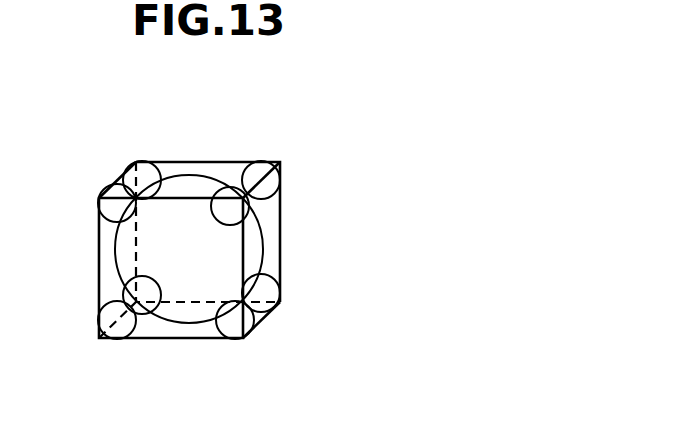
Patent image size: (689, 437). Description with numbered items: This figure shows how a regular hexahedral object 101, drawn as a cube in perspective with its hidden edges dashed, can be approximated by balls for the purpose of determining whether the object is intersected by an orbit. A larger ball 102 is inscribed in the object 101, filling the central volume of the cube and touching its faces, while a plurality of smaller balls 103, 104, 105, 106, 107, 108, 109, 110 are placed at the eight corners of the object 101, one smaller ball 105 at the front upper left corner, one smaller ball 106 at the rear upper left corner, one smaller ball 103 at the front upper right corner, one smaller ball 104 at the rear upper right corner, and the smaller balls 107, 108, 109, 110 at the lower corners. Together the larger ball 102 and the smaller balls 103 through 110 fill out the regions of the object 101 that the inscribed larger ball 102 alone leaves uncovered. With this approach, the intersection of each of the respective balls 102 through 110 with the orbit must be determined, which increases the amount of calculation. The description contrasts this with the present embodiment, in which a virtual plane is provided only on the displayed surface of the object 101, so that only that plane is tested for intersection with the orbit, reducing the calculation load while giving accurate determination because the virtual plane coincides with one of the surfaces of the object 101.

The regular hexahedral object 101 is at (220, 162).
The larger ball 102 is at (265, 245).
The smaller ball 103 is at (242, 205).
The smaller ball 104 is at (269, 180).
The smaller ball 105 is at (112, 207).
The smaller ball 106 is at (143, 172).
The smaller ball 107 is at (113, 318).
The smaller ball 108 is at (122, 283).
The smaller ball 109 is at (233, 326).
The smaller ball 110 is at (262, 293).